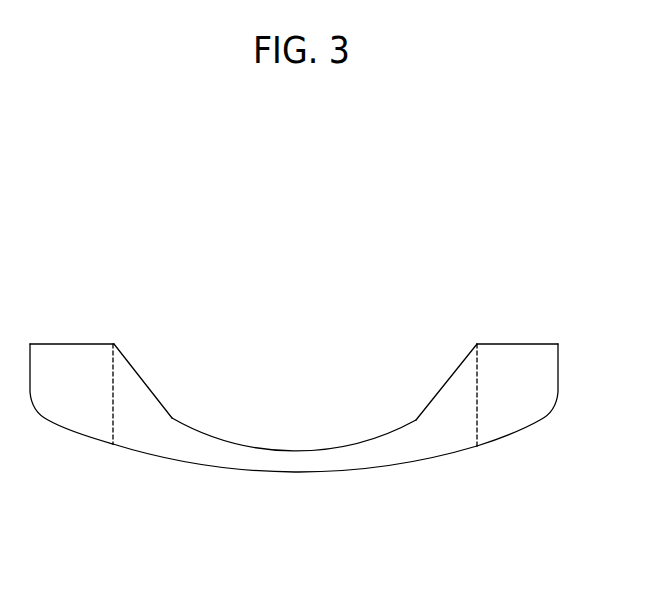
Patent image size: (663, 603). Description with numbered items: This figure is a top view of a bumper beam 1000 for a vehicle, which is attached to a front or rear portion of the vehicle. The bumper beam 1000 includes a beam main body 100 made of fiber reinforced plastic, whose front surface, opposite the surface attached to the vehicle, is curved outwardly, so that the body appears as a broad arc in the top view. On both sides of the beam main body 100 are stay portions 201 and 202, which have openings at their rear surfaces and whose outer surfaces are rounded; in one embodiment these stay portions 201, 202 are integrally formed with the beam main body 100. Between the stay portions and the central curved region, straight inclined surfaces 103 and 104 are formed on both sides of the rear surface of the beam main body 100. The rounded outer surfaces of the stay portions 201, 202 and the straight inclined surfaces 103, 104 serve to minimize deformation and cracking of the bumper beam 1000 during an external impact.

The bumper beam 1000 is at (141, 308).
The beam main body 100 is at (243, 464).
The straight inclined surface 103 is at (148, 388).
The straight inclined surface 104 is at (441, 389).
The stay portion 201 is at (500, 432).
The stay portion 202 is at (84, 425).